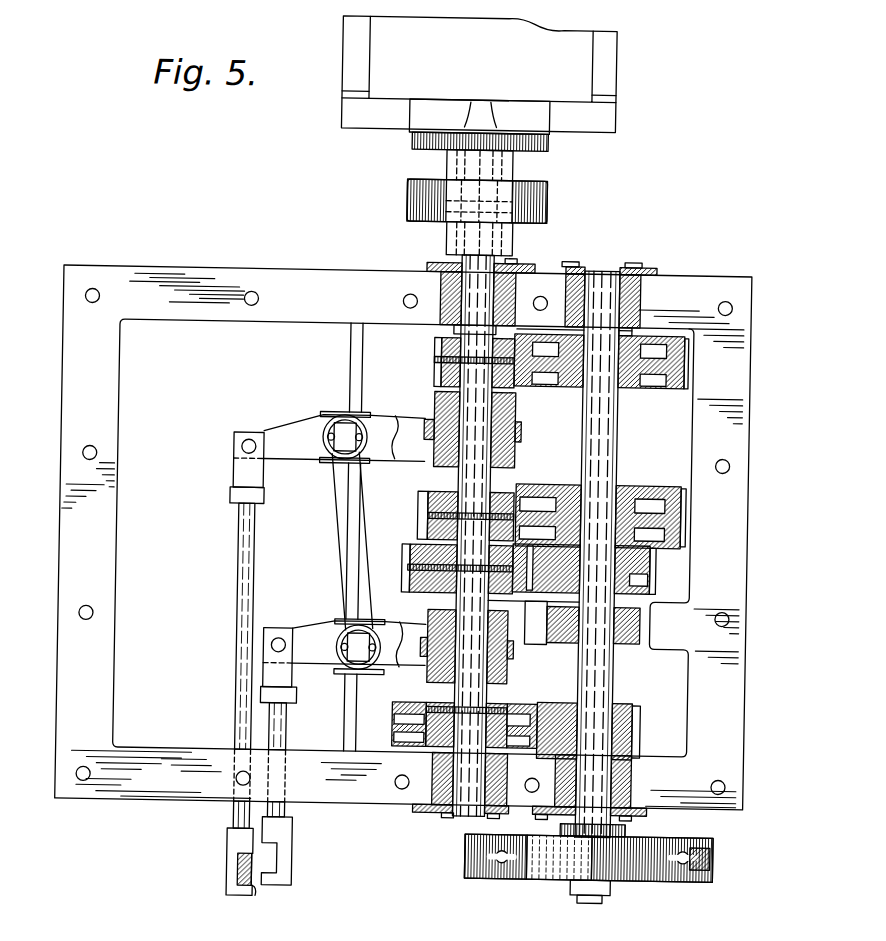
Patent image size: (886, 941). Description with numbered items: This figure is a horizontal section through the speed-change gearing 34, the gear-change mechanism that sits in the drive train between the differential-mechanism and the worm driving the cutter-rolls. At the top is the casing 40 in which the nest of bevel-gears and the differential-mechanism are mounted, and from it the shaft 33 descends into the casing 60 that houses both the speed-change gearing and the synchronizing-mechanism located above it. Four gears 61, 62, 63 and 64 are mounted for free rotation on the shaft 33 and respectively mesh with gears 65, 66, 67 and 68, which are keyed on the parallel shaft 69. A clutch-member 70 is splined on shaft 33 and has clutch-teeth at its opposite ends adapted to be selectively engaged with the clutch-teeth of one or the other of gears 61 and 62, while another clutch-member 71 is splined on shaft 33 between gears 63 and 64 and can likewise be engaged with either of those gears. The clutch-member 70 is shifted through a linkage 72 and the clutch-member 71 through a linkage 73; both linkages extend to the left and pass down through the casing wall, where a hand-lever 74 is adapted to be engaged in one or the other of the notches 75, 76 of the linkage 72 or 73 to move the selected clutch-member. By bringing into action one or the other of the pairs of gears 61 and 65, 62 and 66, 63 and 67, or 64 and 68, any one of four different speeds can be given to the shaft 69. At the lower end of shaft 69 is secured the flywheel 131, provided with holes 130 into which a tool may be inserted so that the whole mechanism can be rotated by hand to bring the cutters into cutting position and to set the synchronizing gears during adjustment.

The shaft 33 is at (462, 258).
The speed-change gearing 34 is at (356, 264).
The casing 40 is at (613, 70).
The casing 60 is at (64, 563).
The gear 61 is at (436, 352).
The gear 62 is at (422, 503).
The gear 63 is at (407, 560).
The gear 64 is at (400, 713).
The gear 65 is at (651, 380).
The gear 66 is at (680, 492).
The gear 67 is at (661, 572).
The gear 68 is at (648, 722).
The shaft 69 is at (620, 434).
The clutch-member 70 is at (437, 408).
The clutch-member 71 is at (434, 624).
The linkage 72 is at (298, 424).
The linkage 73 is at (320, 624).
The hand-lever 74 is at (248, 868).
The notch 75 is at (266, 884).
The notch 76 is at (287, 858).
The holes 130 is at (597, 853).
The flywheel 131 is at (723, 866).